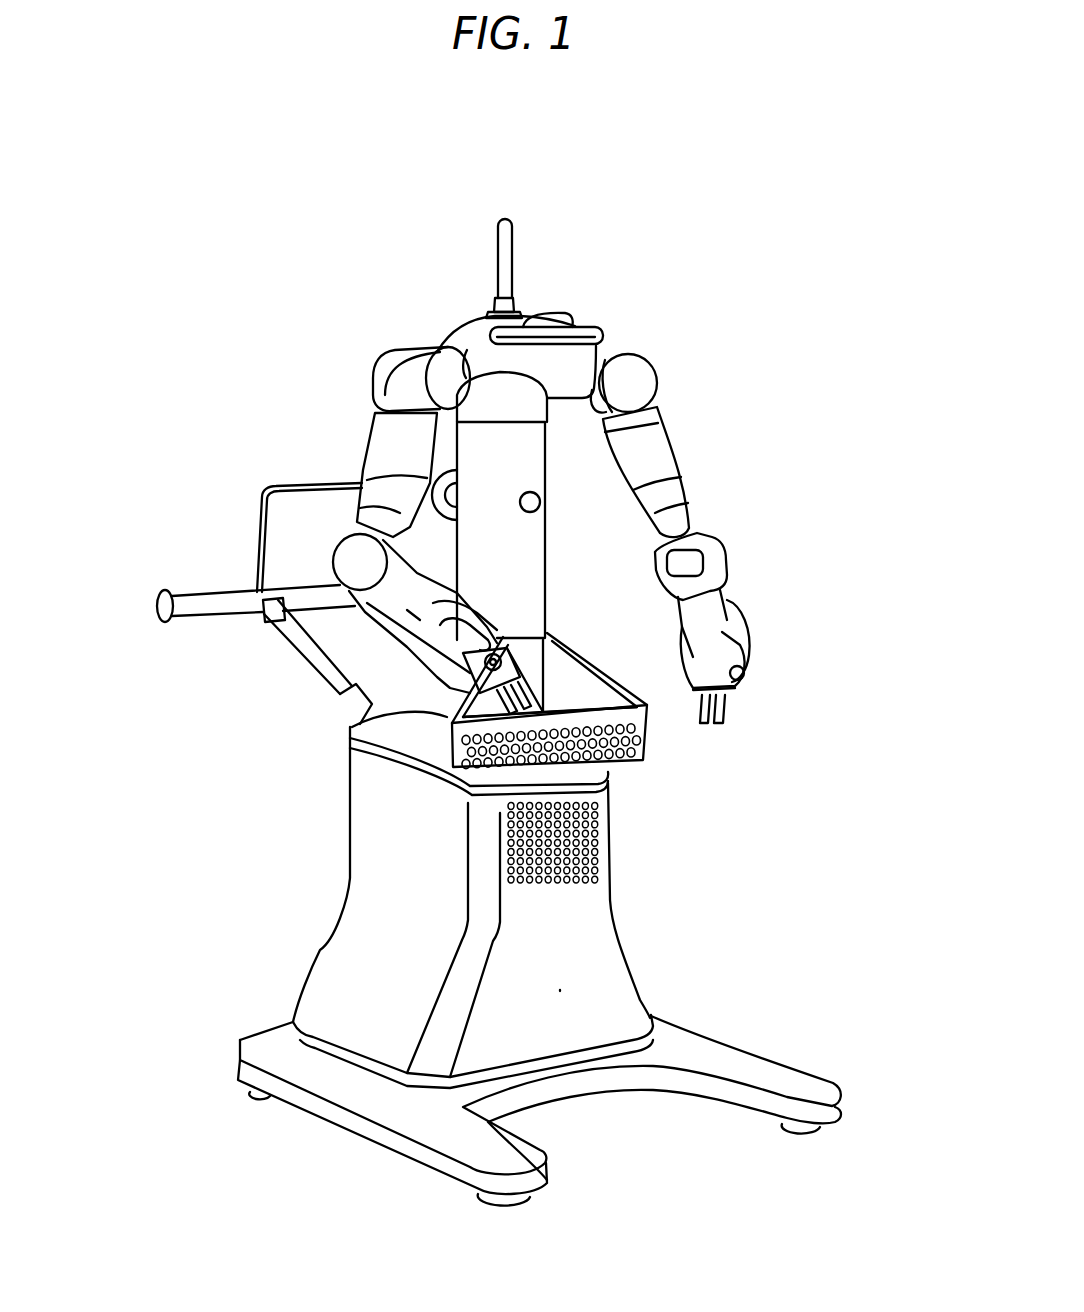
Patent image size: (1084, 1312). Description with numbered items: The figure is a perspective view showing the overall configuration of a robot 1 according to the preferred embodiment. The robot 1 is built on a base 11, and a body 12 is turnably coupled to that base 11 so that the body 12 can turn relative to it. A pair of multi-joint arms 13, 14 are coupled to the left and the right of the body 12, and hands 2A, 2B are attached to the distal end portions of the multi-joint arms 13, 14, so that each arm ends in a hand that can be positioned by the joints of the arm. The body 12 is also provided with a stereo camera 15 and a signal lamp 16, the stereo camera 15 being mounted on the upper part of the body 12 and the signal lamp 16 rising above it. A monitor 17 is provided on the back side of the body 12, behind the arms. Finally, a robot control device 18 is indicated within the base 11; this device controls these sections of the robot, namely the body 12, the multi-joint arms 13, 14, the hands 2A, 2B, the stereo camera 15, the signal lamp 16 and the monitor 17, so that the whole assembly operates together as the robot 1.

The robot 1 is at (688, 174).
The hand 2A is at (522, 692).
The hand 2B is at (734, 713).
The base 11 is at (355, 960).
The body 12 is at (470, 337).
The multi-joint arm 13 is at (374, 434).
The multi-joint arm 14 is at (676, 438).
The stereo camera 15 is at (583, 327).
The signal lamp 16 is at (507, 240).
The monitor 17 is at (287, 515).
The robot control device 18 is at (580, 982).